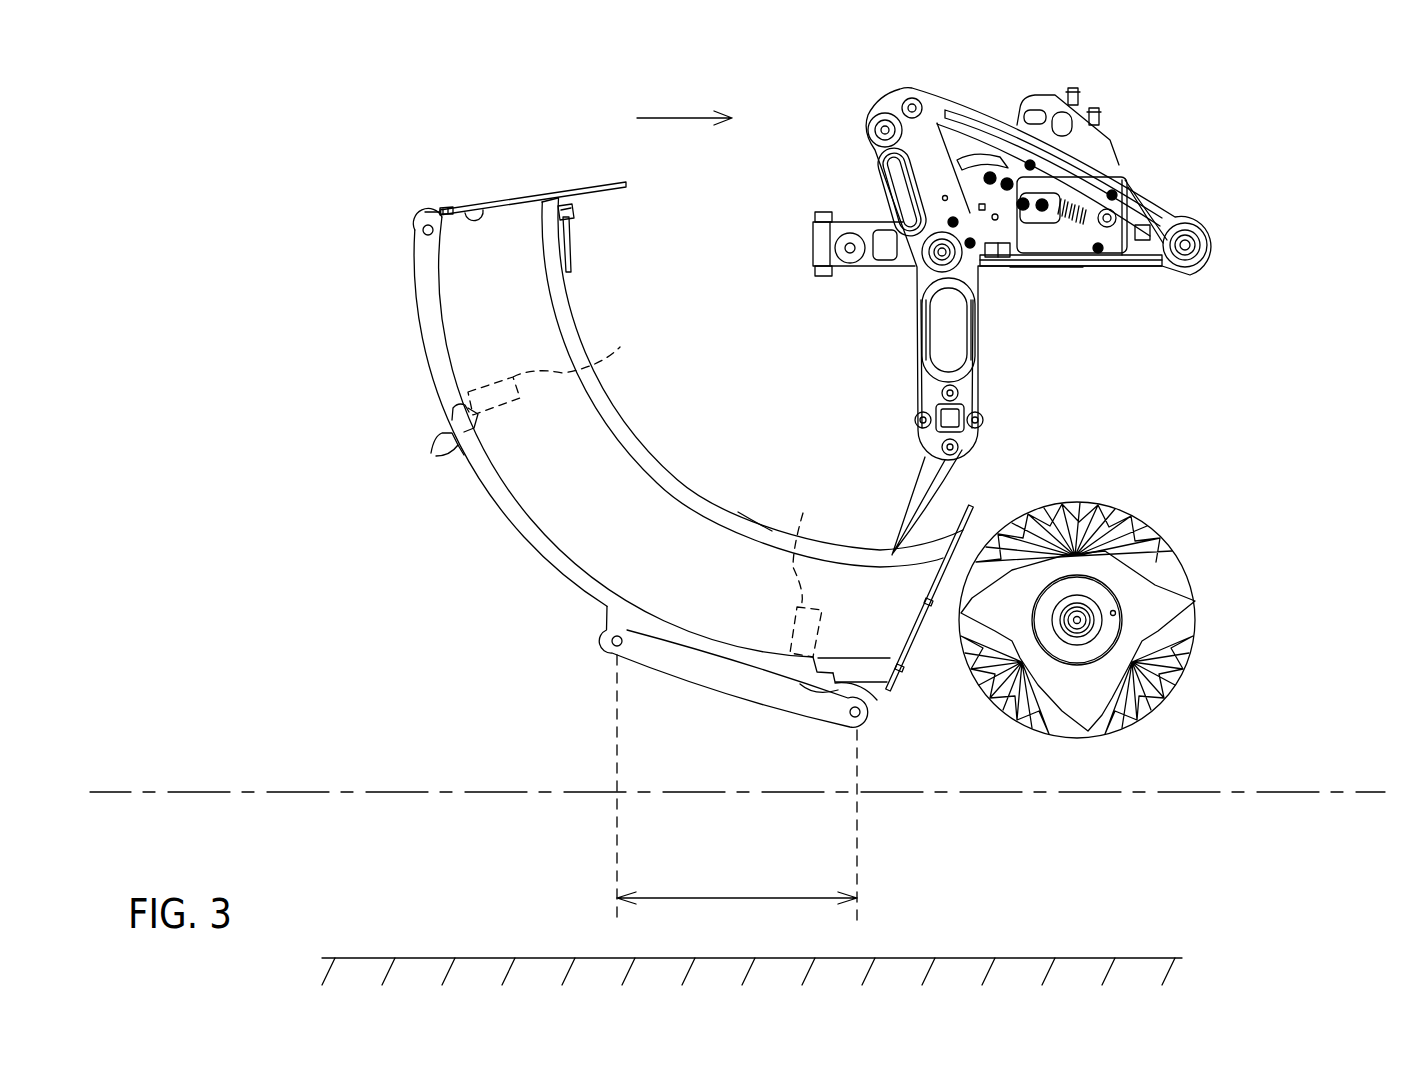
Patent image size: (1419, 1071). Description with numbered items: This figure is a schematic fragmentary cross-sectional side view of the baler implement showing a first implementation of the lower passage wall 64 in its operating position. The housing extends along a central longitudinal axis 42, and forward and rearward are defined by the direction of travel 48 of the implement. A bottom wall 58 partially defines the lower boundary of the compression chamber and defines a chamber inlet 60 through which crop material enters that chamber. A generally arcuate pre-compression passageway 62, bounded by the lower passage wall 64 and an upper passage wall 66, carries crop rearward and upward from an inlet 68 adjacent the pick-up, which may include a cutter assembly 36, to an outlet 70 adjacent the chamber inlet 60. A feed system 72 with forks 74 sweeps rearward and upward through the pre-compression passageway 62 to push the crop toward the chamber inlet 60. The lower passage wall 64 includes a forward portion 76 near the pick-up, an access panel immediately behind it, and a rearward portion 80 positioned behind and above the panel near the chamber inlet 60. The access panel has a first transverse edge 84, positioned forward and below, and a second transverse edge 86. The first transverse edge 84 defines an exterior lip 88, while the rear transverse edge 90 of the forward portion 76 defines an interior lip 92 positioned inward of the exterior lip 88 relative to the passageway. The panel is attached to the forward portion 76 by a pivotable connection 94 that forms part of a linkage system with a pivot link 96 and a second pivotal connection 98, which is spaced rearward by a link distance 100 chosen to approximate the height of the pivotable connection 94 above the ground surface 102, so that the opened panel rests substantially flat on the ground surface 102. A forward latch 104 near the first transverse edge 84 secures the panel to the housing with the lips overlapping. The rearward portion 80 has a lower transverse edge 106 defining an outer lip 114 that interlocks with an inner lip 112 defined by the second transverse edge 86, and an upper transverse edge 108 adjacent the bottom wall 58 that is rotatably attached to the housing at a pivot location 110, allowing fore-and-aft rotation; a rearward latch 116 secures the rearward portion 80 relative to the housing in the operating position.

The cutter assembly 36 is at (1112, 503).
The central longitudinal axis 42 is at (288, 792).
The direction of travel 48 is at (662, 118).
The bottom wall 58 is at (599, 191).
The chamber inlet 60 is at (484, 208).
The pre-compression passageway 62 is at (612, 512).
The lower passage wall 64 is at (508, 525).
The upper passage wall 66 is at (665, 483).
The inlet 68 is at (915, 640).
The outlet 70 is at (535, 205).
The feed system 72 is at (1007, 88).
The forks 74 is at (922, 476).
The forward portion 76 is at (878, 668).
The rearward portion 80 is at (428, 288).
The first transverse edge 84 is at (870, 695).
The second transverse edge 86 is at (455, 410).
The exterior lip 88 is at (835, 682).
The rear transverse edge 90 is at (805, 660).
The interior lip 92 is at (822, 663).
The pivotable connection 94 is at (866, 720).
The pivot link 96 is at (677, 668).
The second pivotal connection 98 is at (610, 655).
The link distance 100 is at (730, 898).
The ground surface 102 is at (1080, 958).
The forward latch 104 is at (819, 543).
The lower transverse edge 106 is at (462, 452).
The upper transverse edge 108 is at (422, 209).
The pivot location 110 is at (418, 235).
The inner lip 112 is at (477, 430).
The outer lip 114 is at (432, 442).
The rearward latch 116 is at (565, 373).